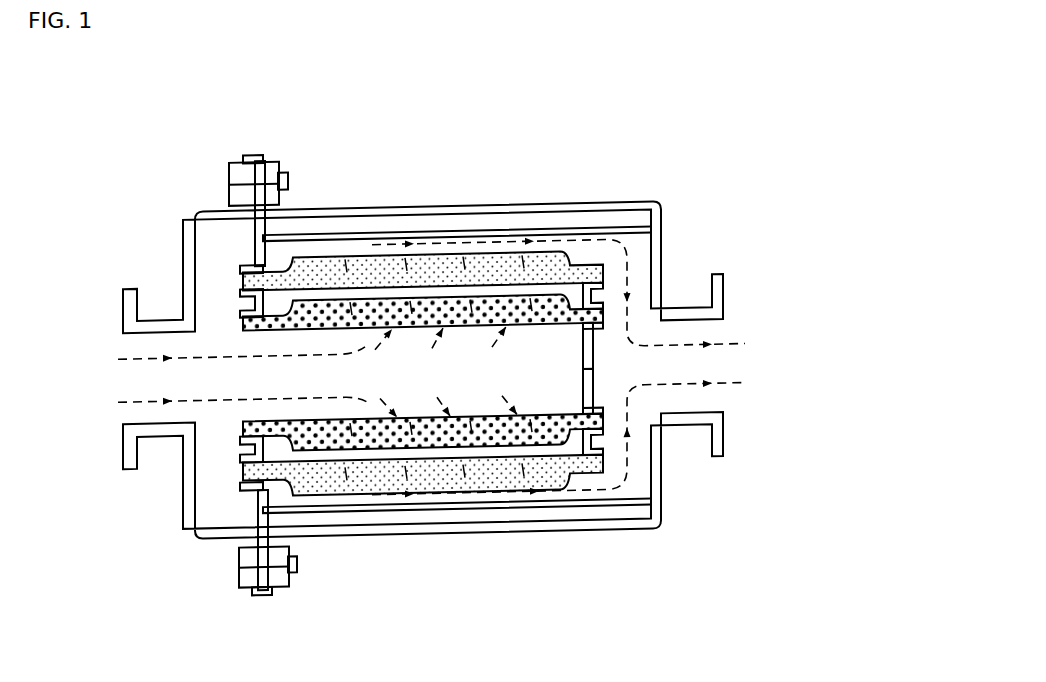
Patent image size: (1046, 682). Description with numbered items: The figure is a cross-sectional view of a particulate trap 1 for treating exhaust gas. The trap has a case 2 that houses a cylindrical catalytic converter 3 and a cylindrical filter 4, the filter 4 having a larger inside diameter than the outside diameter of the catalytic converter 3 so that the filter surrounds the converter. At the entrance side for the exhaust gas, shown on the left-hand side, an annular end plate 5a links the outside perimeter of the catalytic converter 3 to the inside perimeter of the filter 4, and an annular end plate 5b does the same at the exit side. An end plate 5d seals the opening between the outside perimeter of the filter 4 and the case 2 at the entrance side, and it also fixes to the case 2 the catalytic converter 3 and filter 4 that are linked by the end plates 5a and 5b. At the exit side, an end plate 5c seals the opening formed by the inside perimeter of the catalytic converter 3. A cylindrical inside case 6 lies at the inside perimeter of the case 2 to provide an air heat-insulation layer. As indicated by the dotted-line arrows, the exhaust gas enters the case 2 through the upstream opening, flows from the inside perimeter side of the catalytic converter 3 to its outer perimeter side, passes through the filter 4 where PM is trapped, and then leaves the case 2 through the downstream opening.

The particulate trap 1 is at (320, 183).
The case 2 is at (412, 200).
The catalytic converter 3 is at (310, 433).
The filter 4 is at (398, 480).
The end plate 5a is at (257, 440).
The end plate 5b is at (598, 372).
The end plate 5c is at (598, 366).
The end plate 5d is at (252, 258).
The inside case 6 is at (632, 236).